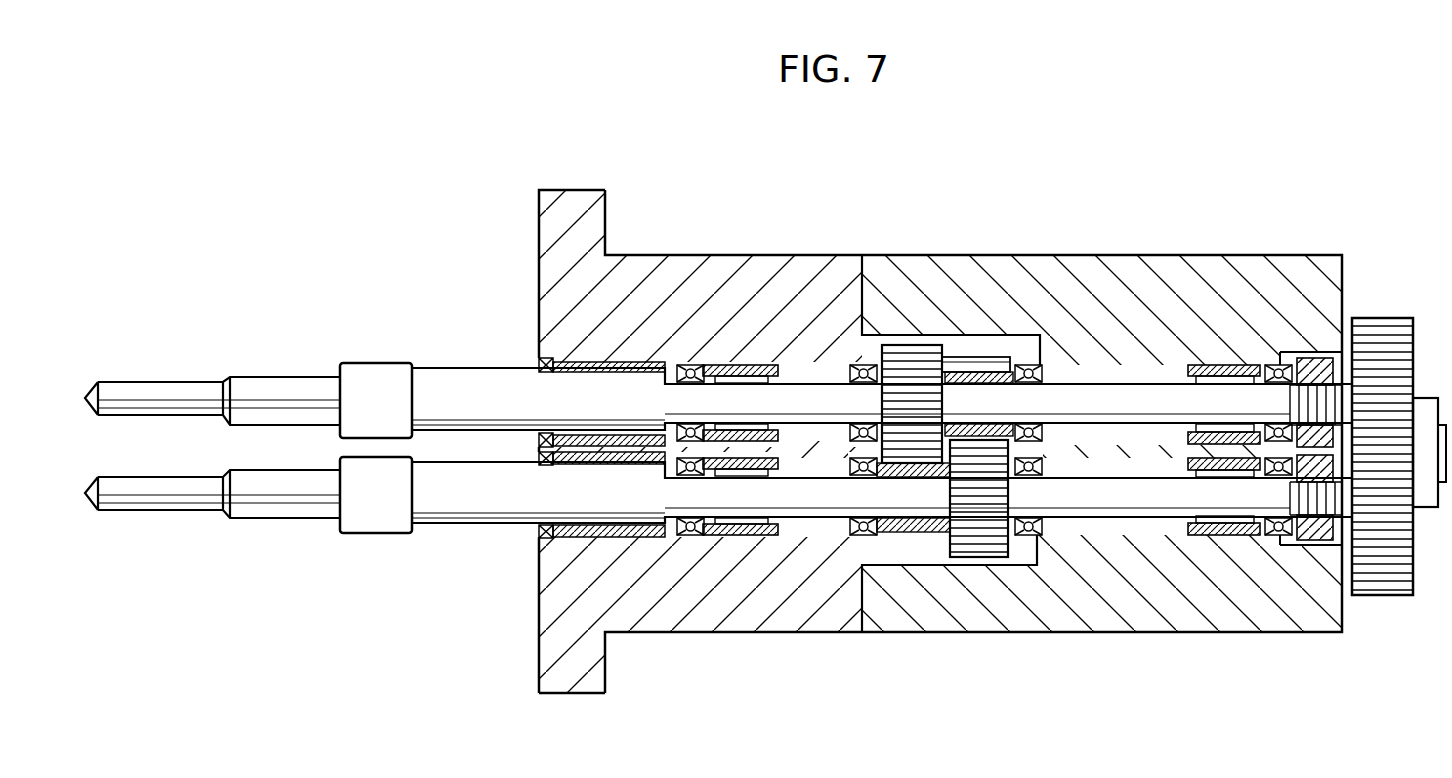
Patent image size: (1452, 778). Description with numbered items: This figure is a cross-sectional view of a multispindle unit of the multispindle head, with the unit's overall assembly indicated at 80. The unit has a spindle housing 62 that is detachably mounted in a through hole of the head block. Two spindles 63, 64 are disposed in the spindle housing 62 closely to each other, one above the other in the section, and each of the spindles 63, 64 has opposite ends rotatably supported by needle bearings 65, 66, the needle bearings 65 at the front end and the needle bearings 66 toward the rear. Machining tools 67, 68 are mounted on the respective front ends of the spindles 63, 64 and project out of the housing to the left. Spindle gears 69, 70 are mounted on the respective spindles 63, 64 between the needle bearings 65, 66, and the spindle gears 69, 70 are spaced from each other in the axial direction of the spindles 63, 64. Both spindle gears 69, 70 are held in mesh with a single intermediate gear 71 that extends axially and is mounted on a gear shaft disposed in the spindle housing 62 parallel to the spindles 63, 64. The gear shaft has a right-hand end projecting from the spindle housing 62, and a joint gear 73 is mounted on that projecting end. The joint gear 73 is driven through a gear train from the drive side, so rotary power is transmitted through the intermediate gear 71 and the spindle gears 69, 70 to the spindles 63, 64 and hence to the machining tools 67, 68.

The spindle housing 62 is at (1140, 642).
The spindle 63 is at (1087, 395).
The spindle 64 is at (1090, 500).
The needle bearing 65 is at (738, 362).
The needle bearing 66 is at (1220, 372).
The machining tool 67 is at (184, 397).
The machining tool 68 is at (160, 487).
The spindle gear 69 is at (900, 357).
The spindle gear 70 is at (993, 557).
The intermediate gear 71 is at (972, 375).
The joint gear 73 is at (1383, 360).
The spindle unit 80 is at (1130, 250).